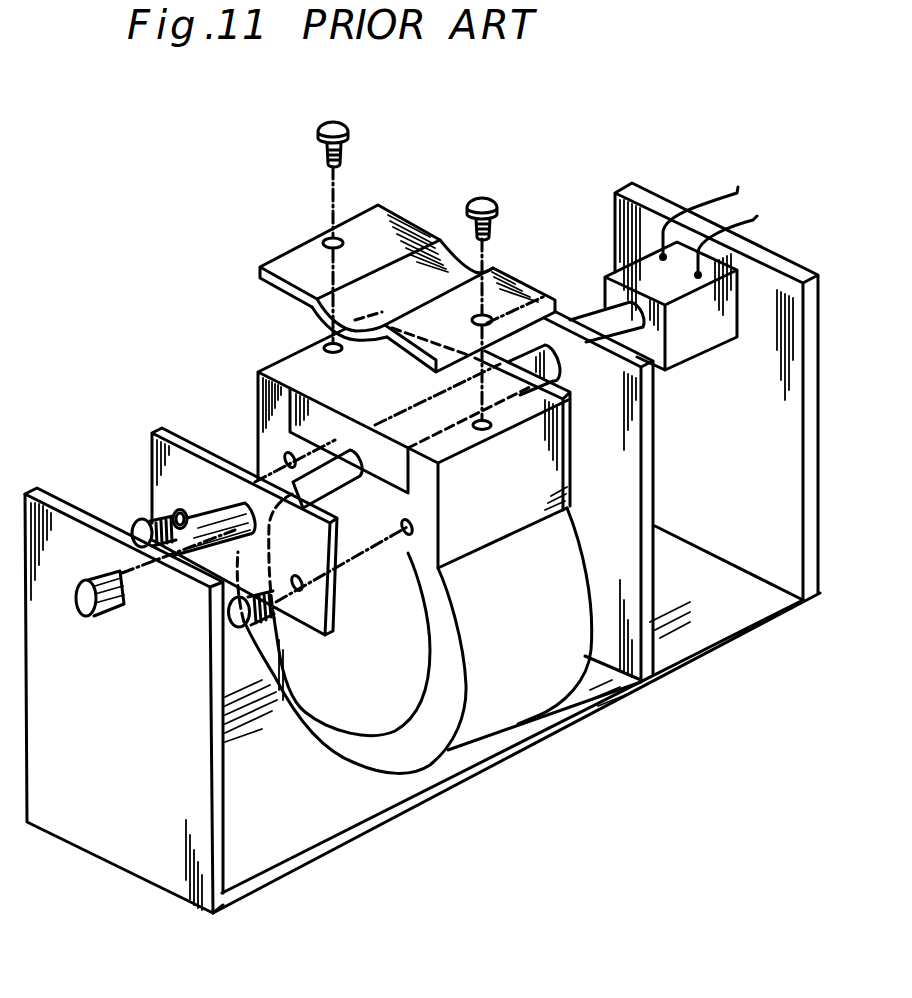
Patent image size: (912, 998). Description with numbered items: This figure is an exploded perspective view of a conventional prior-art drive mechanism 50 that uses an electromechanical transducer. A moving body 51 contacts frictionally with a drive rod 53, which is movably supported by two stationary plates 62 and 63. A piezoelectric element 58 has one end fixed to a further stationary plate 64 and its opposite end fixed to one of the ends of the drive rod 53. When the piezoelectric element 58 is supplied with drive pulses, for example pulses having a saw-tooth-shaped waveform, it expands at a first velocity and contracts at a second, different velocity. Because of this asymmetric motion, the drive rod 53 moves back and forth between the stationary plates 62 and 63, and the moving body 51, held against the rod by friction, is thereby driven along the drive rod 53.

The prior art linear actuator 50 is at (182, 245).
The moving body 51 is at (527, 686).
The drive rod 53 is at (257, 485).
The piezoelectric element 58 is at (633, 272).
The stationary plate 62 is at (182, 872).
The stationary plate 63 is at (653, 630).
The stationary plate 64 is at (813, 577).